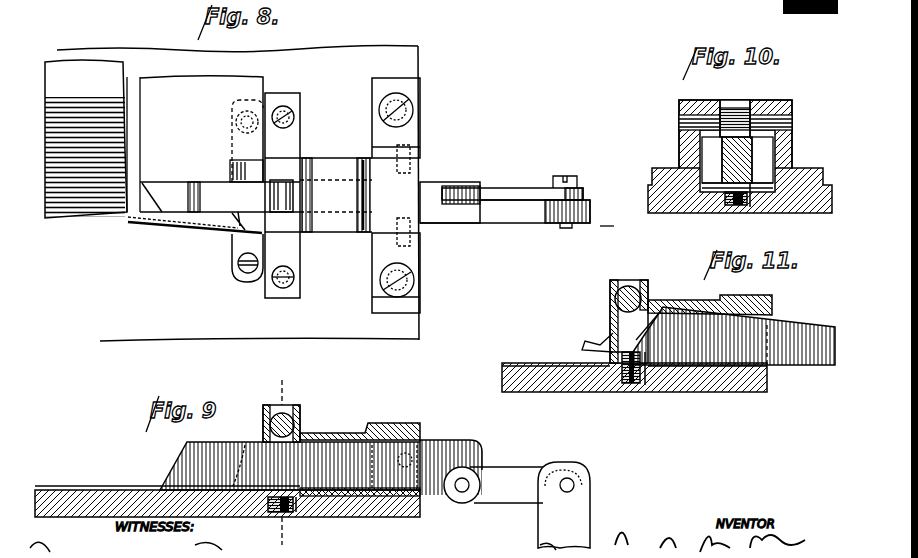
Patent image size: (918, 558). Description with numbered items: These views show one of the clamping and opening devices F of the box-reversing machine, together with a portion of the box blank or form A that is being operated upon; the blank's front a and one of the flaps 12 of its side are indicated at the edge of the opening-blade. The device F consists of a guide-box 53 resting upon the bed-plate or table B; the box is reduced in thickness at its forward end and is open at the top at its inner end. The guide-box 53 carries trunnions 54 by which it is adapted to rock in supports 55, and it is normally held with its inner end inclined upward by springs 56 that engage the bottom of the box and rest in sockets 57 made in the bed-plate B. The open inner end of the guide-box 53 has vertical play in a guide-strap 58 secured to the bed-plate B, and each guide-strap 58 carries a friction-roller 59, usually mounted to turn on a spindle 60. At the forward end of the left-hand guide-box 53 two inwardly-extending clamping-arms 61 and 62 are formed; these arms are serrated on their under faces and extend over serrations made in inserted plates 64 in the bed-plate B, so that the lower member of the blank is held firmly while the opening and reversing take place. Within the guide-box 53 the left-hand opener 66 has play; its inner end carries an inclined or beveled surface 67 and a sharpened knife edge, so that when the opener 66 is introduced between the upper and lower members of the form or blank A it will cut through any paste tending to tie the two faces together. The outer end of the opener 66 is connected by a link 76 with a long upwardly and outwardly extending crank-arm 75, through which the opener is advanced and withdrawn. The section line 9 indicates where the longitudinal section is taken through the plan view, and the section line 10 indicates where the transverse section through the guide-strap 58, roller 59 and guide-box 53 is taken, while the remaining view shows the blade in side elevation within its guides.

In FIG. 8, the front a is at (85, 100).
In FIG. 8, the box blank or form A is at (132, 98).
In FIG. 9, the box blank or form A is at (104, 490).
In FIG. 8, the table B is at (164, 298).
In FIG. 10, the table B is at (805, 202).
In FIG. 11, the table B is at (532, 352).
In FIG. 9, the table B is at (60, 494).
In FIG. 8, the clamping and opening devices F is at (498, 143).
In FIG. 10, the clamping and opening devices F is at (652, 91).
In FIG. 11, the clamping and opening devices F is at (756, 405).
In FIG. 9, the clamping and opening devices F is at (432, 528).
In FIG. 8, the section line 9 9 is at (378, 217).
In FIG. 9, the section line 10 10 is at (283, 462).
In FIG. 8, the flaps 12 is at (201, 129).
In FIG. 8, the guide-box 53 is at (390, 195).
In FIG. 10, the guide-box 53 is at (788, 154).
In FIG. 11, the guide-box 53 is at (775, 304).
In FIG. 9, the guide-box 53 is at (392, 410).
In FIG. 8, the trunnions 54 is at (410, 160).
In FIG. 11, the trunnions 54 is at (780, 330).
In FIG. 9, the trunnions 54 is at (410, 455).
In FIG. 8, the supports 55 is at (410, 137).
In FIG. 10, the springs 56 is at (727, 207).
In FIG. 11, the springs 56 is at (630, 385).
In FIG. 9, the springs 56 is at (296, 514).
In FIG. 10, the sockets 57 is at (752, 208).
In FIG. 11, the sockets 57 is at (648, 388).
In FIG. 9, the sockets 57 is at (270, 514).
In FIG. 8, the guide-strap 58 is at (292, 153).
In FIG. 10, the guide-strap 58 is at (793, 105).
In FIG. 11, the guide-strap 58 is at (610, 290).
In FIG. 9, the guide-strap 58 is at (298, 420).
In FIG. 8, the friction-roller 59 is at (290, 191).
In FIG. 10, the friction-roller 59 is at (738, 112).
In FIG. 11, the friction-roller 59 is at (630, 288).
In FIG. 9, the friction-roller 59 is at (292, 414).
In FIG. 10, the spindle 60 is at (679, 122).
In FIG. 8, the clamping-arm 61 is at (230, 165).
In FIG. 11, the clamping-arm 61 is at (612, 329).
In FIG. 8, the clamping-arm 62 is at (232, 230).
In FIG. 8, the inserted plates 64 is at (247, 191).
In FIG. 11, the inserted plates 64 is at (578, 392).
In FIG. 8, the left-hand opener 66 is at (478, 174).
In FIG. 10, the left-hand opener 66 is at (722, 118).
In FIG. 11, the left-hand opener 66 is at (820, 362).
In FIG. 9, the left-hand opener 66 is at (218, 444).
In FIG. 8, the inclined or beveled surface 67 is at (168, 194).
In FIG. 11, the inclined or beveled surface 67 is at (638, 326).
In FIG. 9, the inclined or beveled surface 67 is at (246, 446).
In FIG. 8, the crank-arm 75 is at (505, 214).
In FIG. 9, the crank-arm 75 is at (564, 505).
In FIG. 8, the link 76 is at (516, 198).
In FIG. 9, the link 76 is at (493, 485).